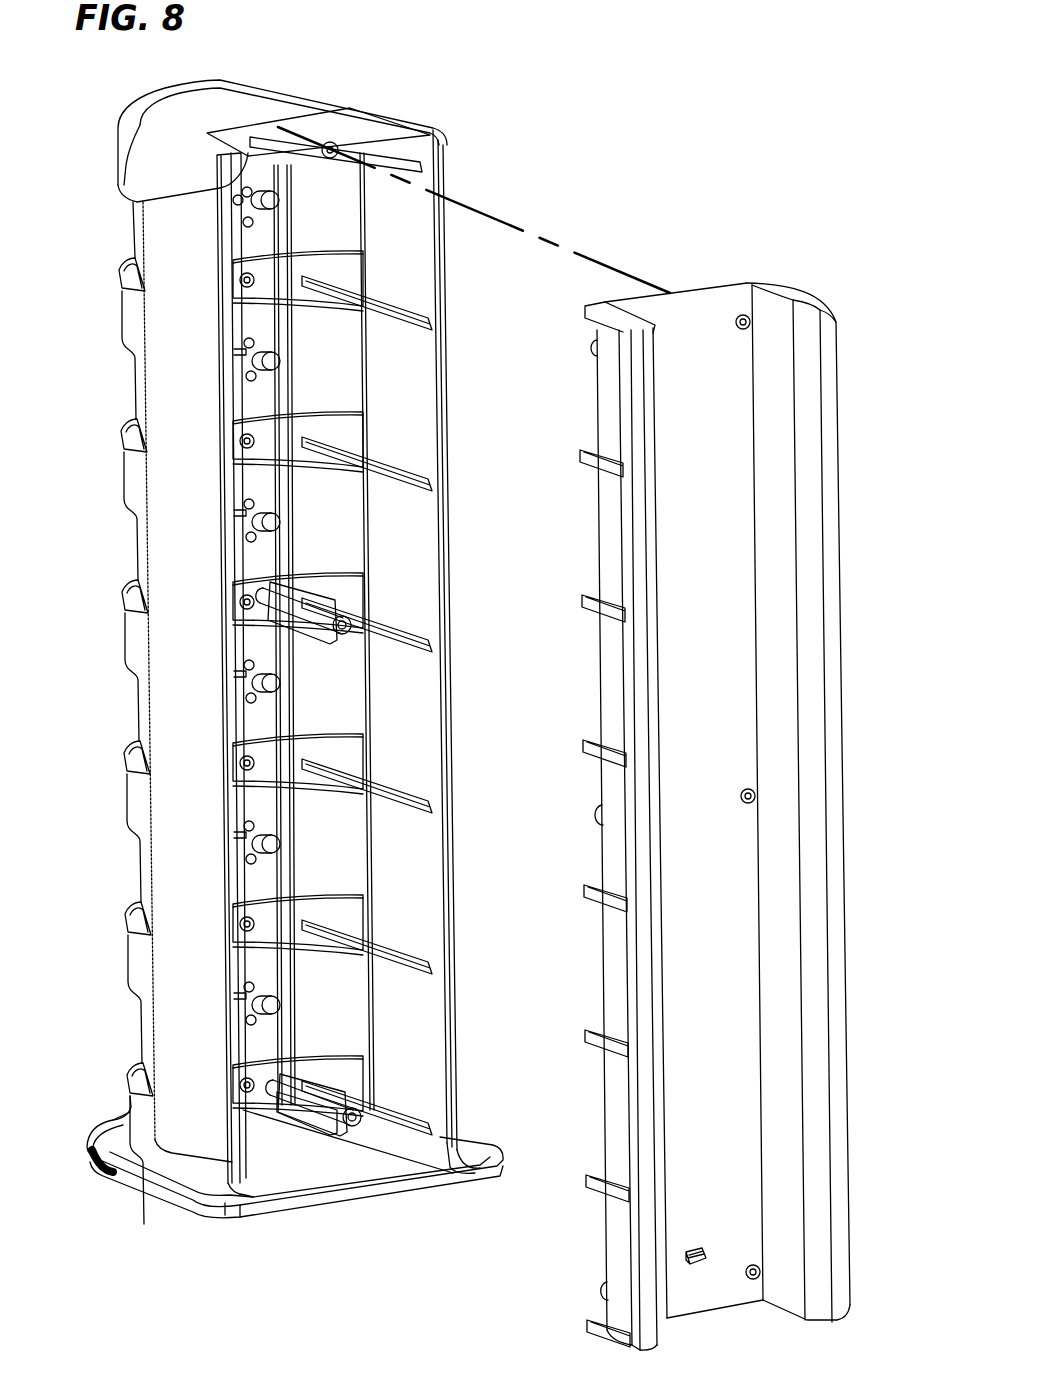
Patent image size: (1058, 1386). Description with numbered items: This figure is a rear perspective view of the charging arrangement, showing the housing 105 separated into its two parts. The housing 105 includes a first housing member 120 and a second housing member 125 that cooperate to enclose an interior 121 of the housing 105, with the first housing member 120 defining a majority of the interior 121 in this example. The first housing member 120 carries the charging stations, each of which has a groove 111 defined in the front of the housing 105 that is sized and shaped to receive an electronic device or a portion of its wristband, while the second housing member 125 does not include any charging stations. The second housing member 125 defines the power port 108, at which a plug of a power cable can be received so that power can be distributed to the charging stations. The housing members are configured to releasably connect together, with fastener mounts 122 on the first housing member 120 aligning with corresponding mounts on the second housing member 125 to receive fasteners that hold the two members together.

The housing 105 is at (280, 52).
The power port 108 is at (706, 1258).
The groove 111 is at (147, 383).
The first housing member 120 is at (103, 149).
The interior 121 is at (318, 201).
The fastener mounts 122 is at (312, 613).
The second housing member 125 is at (838, 402).